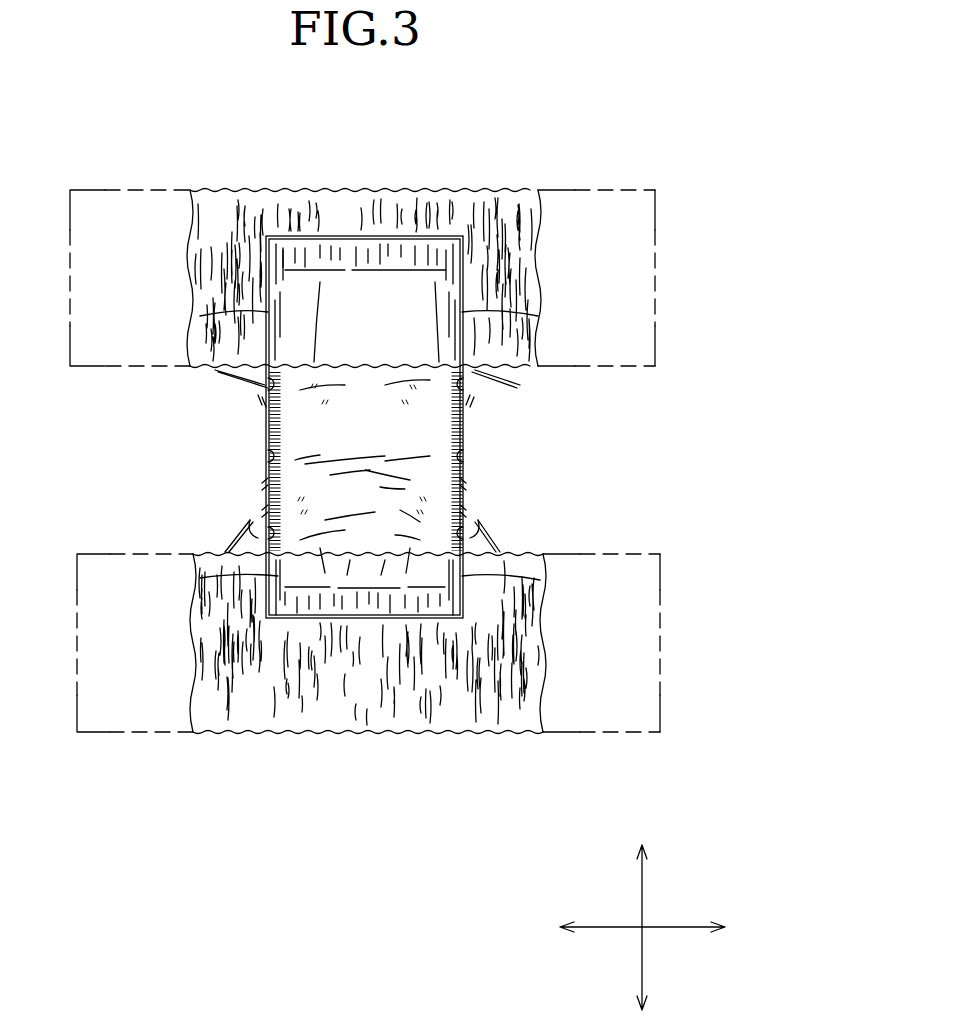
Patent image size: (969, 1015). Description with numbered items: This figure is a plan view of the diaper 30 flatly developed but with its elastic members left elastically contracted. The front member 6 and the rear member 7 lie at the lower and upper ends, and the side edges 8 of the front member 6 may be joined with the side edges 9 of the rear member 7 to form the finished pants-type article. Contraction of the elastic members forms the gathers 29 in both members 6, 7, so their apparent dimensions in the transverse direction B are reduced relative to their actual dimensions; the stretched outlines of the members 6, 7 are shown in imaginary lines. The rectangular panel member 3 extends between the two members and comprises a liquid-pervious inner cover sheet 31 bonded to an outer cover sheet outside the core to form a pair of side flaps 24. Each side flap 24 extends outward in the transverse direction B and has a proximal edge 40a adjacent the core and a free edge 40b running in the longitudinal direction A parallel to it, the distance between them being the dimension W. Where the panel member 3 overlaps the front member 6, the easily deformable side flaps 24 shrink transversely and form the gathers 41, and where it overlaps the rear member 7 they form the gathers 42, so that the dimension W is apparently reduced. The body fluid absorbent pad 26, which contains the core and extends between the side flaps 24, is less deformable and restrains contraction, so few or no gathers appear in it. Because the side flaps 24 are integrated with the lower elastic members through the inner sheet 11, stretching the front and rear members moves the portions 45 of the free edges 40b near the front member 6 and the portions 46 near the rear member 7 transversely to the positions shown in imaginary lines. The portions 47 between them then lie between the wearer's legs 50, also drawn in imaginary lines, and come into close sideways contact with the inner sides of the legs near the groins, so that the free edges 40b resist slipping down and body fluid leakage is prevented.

The diaper 30 is at (526, 106).
The rear member 7 is at (95, 186).
The front member 6 is at (113, 737).
The inner sheet 11 is at (385, 206).
The gathers 29 is at (492, 200).
The side edges of the rear member 9 is at (196, 258).
The side edges of the front member 8 is at (200, 655).
The gathers 42 is at (200, 316).
The gathers 41 is at (200, 578).
The panel member 3 is at (476, 424).
The portions of the free edges 46 is at (270, 370).
The side flaps 24 is at (268, 415).
The portions of the free edges 47 is at (262, 487).
The proximal edge 40a is at (268, 449).
The free edge 40b is at (268, 496).
The inner cover sheet 31 is at (432, 464).
The body fluid absorbent pad 26 is at (470, 500).
The wearer's legs 50 is at (250, 520).
The portions of the free edges 45 is at (245, 530).
The dimension W is at (290, 398).
The longitudinal direction A is at (644, 878).
The transverse direction B is at (678, 928).